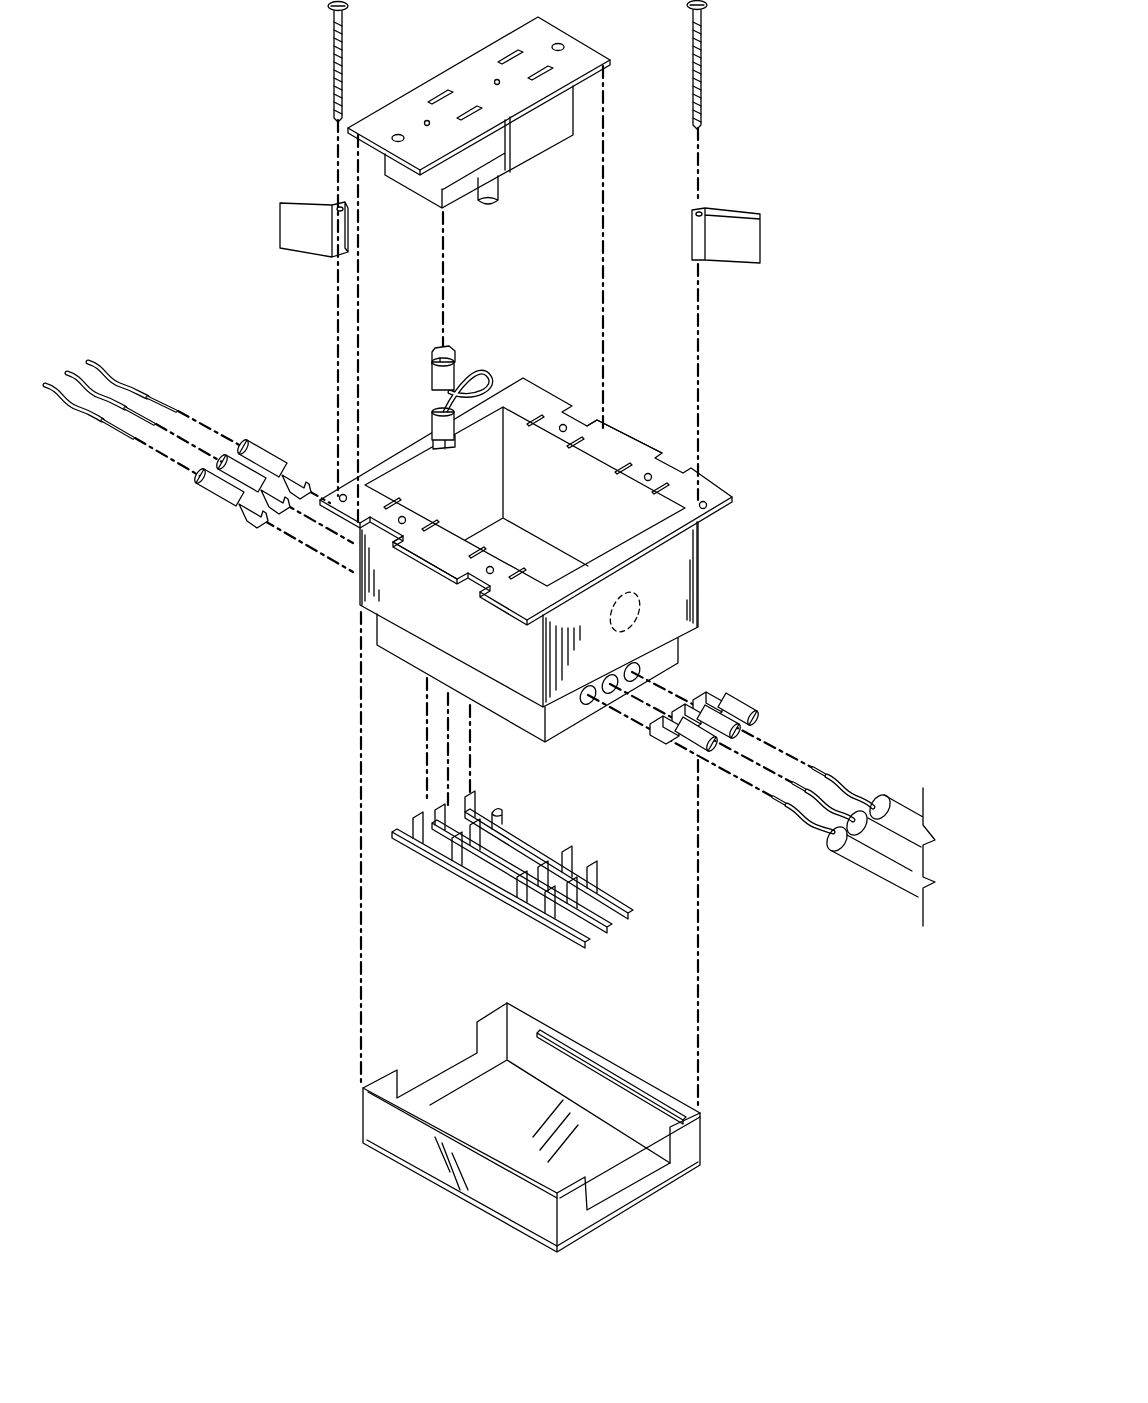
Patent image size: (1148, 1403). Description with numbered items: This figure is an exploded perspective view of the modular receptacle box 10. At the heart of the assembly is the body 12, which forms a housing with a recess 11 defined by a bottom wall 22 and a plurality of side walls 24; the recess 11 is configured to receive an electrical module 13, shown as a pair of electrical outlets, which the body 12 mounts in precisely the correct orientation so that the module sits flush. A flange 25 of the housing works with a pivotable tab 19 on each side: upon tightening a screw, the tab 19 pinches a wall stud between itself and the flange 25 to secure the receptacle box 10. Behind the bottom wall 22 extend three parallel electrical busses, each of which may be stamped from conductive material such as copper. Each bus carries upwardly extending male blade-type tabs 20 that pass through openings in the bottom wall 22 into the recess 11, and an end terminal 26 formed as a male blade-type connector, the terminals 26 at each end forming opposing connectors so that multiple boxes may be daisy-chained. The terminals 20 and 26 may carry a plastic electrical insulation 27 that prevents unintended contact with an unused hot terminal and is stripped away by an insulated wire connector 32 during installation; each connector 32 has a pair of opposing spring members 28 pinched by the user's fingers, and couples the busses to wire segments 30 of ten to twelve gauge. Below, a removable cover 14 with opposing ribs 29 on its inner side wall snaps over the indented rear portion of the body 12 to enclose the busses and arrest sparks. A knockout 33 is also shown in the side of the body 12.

The modular receptacle box 10 is at (121, 54).
The recess 11 is at (584, 517).
The body 12 is at (357, 578).
The electrical module 13 is at (462, 69).
The removable cover 14 is at (360, 1105).
The pivotable tab 19 is at (308, 205).
The male tab 20 is at (548, 846).
The bottom wall 22 is at (490, 535).
The side wall 24 is at (598, 470).
The flange 25 is at (725, 491).
The end terminal 26 is at (595, 903).
The electrical insulation 27 is at (492, 812).
The spring member 28 is at (500, 192).
The rib 29 is at (635, 1090).
The wire segment 30 is at (128, 374).
The insulated wire connector 32 is at (430, 378).
The knockout 33 is at (640, 605).